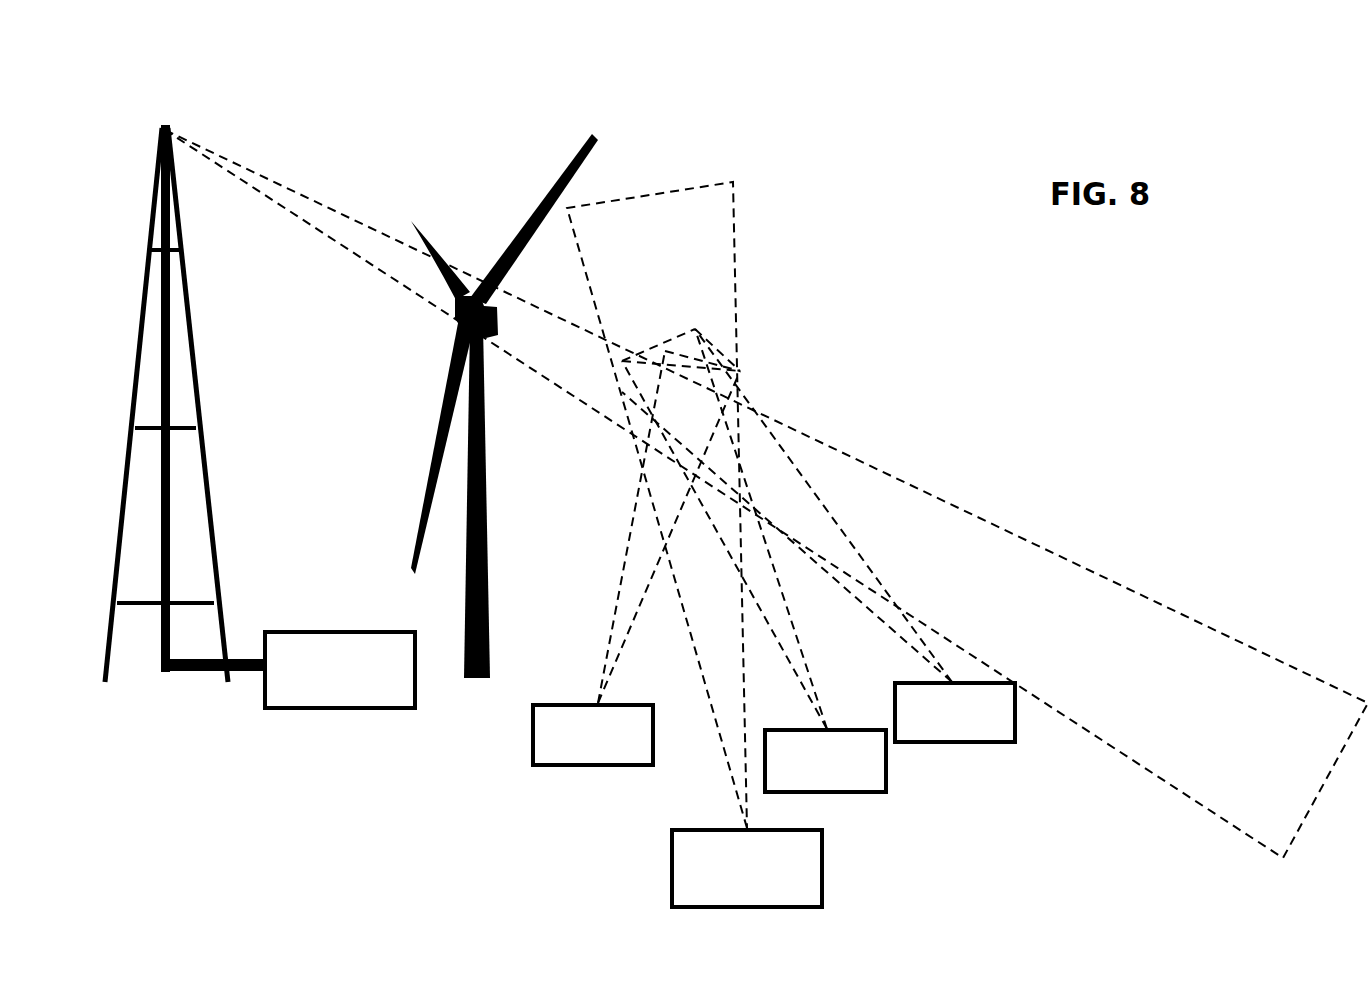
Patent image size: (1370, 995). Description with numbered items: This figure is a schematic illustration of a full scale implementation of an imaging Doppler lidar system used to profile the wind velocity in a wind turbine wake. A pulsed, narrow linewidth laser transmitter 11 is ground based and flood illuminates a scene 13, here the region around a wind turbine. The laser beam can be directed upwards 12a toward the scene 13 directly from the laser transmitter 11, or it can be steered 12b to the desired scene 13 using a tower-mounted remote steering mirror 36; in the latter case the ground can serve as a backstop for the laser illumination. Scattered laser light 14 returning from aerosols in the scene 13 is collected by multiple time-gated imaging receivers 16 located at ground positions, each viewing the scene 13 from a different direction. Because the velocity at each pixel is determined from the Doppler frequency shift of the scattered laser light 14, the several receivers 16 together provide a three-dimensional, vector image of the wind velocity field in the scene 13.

The remote steering mirror 36 is at (173, 350).
The steered laser beam 12b is at (336, 212).
The upward-directed laser beam 12a is at (713, 719).
The scene 13 is at (732, 361).
The scattered laser light 14 is at (614, 597).
The imaging receiver 16 is at (556, 767).
The laser transmitter 11 is at (282, 710).